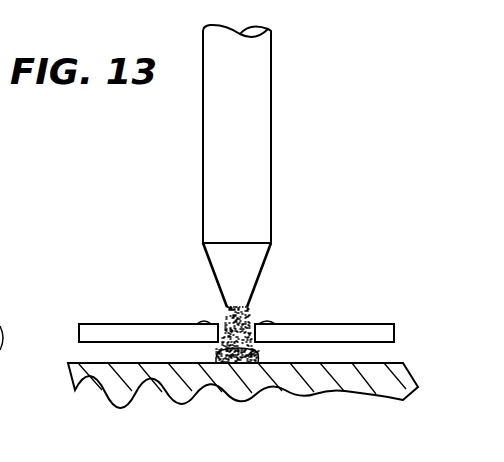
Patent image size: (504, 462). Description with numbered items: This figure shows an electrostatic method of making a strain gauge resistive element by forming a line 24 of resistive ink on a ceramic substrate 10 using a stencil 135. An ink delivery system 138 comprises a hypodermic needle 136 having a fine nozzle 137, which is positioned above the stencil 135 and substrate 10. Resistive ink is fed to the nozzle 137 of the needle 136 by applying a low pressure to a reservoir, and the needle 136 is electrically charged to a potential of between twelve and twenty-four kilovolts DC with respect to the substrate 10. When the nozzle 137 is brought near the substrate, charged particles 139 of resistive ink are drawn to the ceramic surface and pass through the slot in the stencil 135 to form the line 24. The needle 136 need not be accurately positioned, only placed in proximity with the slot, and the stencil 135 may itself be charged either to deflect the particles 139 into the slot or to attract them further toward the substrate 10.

The substrate 10 is at (353, 378).
The line 24 is at (247, 362).
The stencil 135 is at (355, 332).
The hypodermic needle 136 is at (253, 93).
The nozzle 137 is at (251, 278).
The ink delivery system 138 is at (152, 175).
The charged particles 139 is at (218, 312).